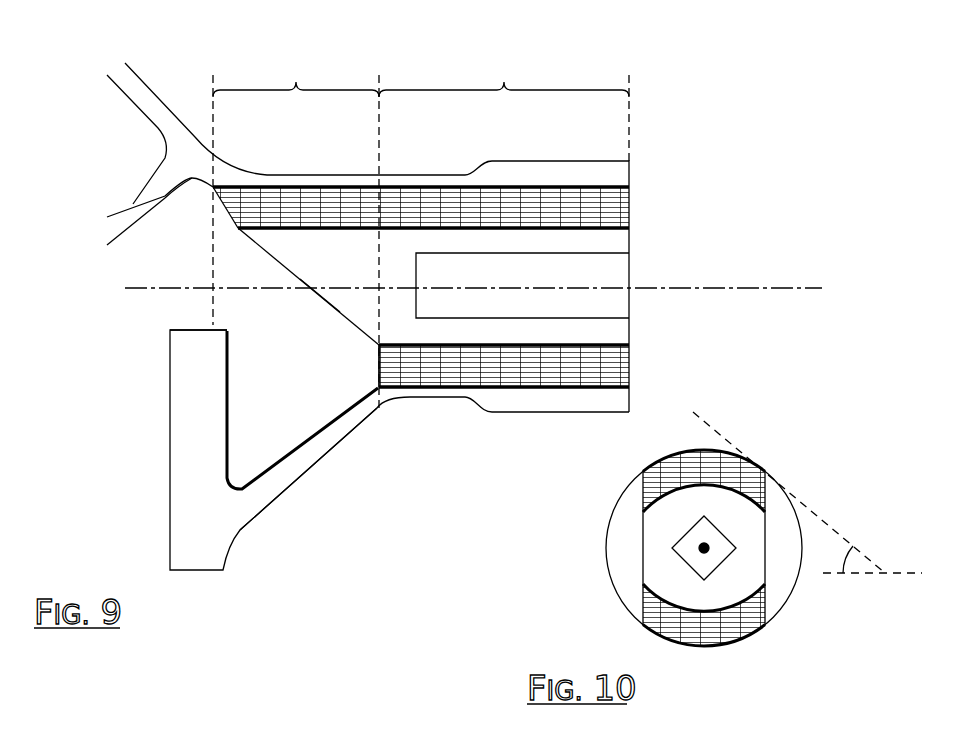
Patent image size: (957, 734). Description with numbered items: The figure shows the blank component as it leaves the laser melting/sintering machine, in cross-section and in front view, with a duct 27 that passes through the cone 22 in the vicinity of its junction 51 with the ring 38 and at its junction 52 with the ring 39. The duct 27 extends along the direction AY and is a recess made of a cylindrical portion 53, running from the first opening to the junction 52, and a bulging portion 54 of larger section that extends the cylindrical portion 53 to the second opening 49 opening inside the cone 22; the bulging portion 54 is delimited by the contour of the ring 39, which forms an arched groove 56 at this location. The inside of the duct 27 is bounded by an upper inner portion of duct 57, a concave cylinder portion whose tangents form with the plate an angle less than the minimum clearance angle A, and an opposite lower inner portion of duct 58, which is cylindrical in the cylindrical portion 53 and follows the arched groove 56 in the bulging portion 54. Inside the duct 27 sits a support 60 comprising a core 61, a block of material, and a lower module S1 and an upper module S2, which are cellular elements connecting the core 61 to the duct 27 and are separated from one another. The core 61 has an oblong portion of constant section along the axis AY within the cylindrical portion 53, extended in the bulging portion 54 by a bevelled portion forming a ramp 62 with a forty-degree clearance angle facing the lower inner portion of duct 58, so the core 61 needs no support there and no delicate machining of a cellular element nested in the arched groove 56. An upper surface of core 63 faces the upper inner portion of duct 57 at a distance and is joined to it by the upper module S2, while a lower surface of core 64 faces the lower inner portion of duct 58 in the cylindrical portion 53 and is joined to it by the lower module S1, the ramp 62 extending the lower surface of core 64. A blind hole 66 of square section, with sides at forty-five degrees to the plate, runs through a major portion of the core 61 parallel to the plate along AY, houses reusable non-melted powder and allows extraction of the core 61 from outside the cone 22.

In FIG. 9, the cone 22 is at (140, 68).
In FIG. 9, the duct 27 is at (680, 118).
In FIG. 9, the ring 38 is at (108, 198).
In FIG. 9, the ring 39 is at (162, 422).
In FIG. 9, the second opening 49 is at (213, 308).
In FIG. 9, the junction 51 is at (163, 200).
In FIG. 9, the junction 52 is at (380, 402).
In FIG. 9, the cylindrical portion 53 is at (504, 74).
In FIG. 9, the bulging portion 54 is at (296, 74).
In FIG. 9, the arched groove 56 is at (228, 490).
In FIG. 9, the upper inner portion of duct 57 is at (629, 207).
In FIG. 10, the upper inner portion of duct 57 is at (748, 450).
In FIG. 9, the lower inner portion of duct 58 is at (629, 371).
In FIG. 10, the lower inner portion of duct 58 is at (762, 628).
In FIG. 9, the support 60 is at (352, 357).
In FIG. 10, the support 60 is at (502, 485).
In FIG. 9, the core 61 is at (308, 286).
In FIG. 10, the core 61 is at (660, 556).
In FIG. 9, the ramp 62 is at (340, 318).
In FIG. 9, the upper surface of core 63 is at (557, 229).
In FIG. 10, the upper surface of core 63 is at (772, 478).
In FIG. 9, the lower surface of core 64 is at (588, 350).
In FIG. 10, the lower surface of core 64 is at (716, 612).
In FIG. 9, the blind hole 66 is at (456, 422).
In FIG. 10, the blind hole 66 is at (728, 565).
In FIG. 9, the lower module S1 is at (504, 366).
In FIG. 10, the lower module S1 is at (648, 632).
In FIG. 9, the upper module S2 is at (421, 207).
In FIG. 10, the upper module S2 is at (648, 465).
In FIG. 9, the direction AY is at (803, 288).
In FIG. 10, the direction AY is at (710, 547).
In FIG. 10, the minimum clearance angle A is at (807, 492).